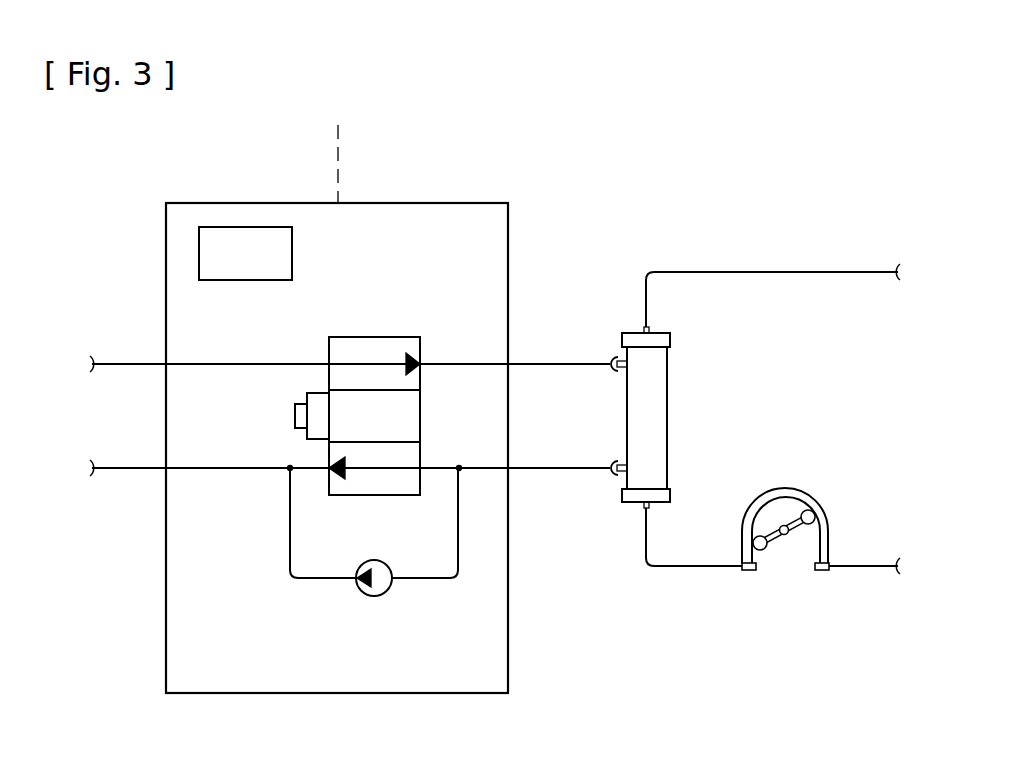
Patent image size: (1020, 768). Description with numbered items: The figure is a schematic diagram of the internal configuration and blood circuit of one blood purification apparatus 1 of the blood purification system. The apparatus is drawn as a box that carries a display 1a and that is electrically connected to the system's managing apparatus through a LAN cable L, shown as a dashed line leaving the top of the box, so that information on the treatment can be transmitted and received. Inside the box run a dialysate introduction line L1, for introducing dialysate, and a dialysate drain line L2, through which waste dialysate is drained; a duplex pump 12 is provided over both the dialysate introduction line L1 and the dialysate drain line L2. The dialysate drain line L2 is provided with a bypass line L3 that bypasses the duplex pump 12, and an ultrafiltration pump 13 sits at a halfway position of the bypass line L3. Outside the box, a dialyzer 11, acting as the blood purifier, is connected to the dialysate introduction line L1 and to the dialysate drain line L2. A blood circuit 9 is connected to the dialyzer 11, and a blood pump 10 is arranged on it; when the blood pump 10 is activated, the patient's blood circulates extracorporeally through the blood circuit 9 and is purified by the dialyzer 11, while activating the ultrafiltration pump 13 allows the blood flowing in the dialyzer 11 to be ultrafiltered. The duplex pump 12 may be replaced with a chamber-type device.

The blood purification apparatus 1 is at (596, 208).
The display 1a is at (245, 253).
The blood circuit 9 is at (697, 563).
The blood pump 10 is at (790, 570).
The dialyzer 11 is at (667, 405).
The duplex pump 12 is at (394, 336).
The ultrafiltration pump 13 is at (378, 597).
The LAN cable L is at (333, 165).
The dialysate introduction line L1 is at (528, 363).
The dialysate drain line L2 is at (528, 467).
The bypass line L3 is at (459, 543).